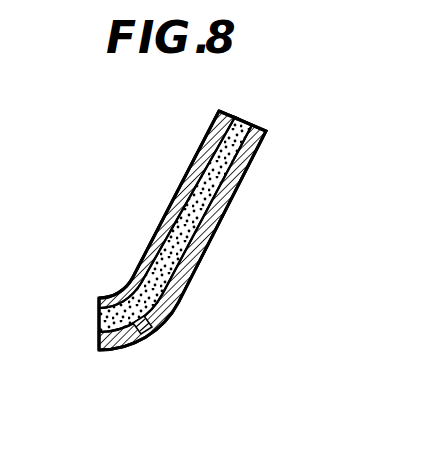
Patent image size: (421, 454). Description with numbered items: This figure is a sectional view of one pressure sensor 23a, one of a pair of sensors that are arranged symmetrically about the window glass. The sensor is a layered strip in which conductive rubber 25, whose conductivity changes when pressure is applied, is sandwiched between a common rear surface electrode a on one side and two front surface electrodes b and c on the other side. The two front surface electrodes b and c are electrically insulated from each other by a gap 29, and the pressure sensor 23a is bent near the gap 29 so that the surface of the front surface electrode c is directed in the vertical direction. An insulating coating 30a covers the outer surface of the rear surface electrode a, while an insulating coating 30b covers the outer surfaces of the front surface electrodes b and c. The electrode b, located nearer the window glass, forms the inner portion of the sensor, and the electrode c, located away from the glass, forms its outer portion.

The pressure sensor 23a is at (158, 212).
The insulating coating 30a is at (130, 283).
The insulating coating 30b is at (207, 247).
The conductive rubber 25 is at (99, 318).
The gap 29 is at (147, 335).
The common rear surface electrode a is at (185, 197).
The front surface electrode b is at (263, 129).
The front surface electrode c is at (99, 348).